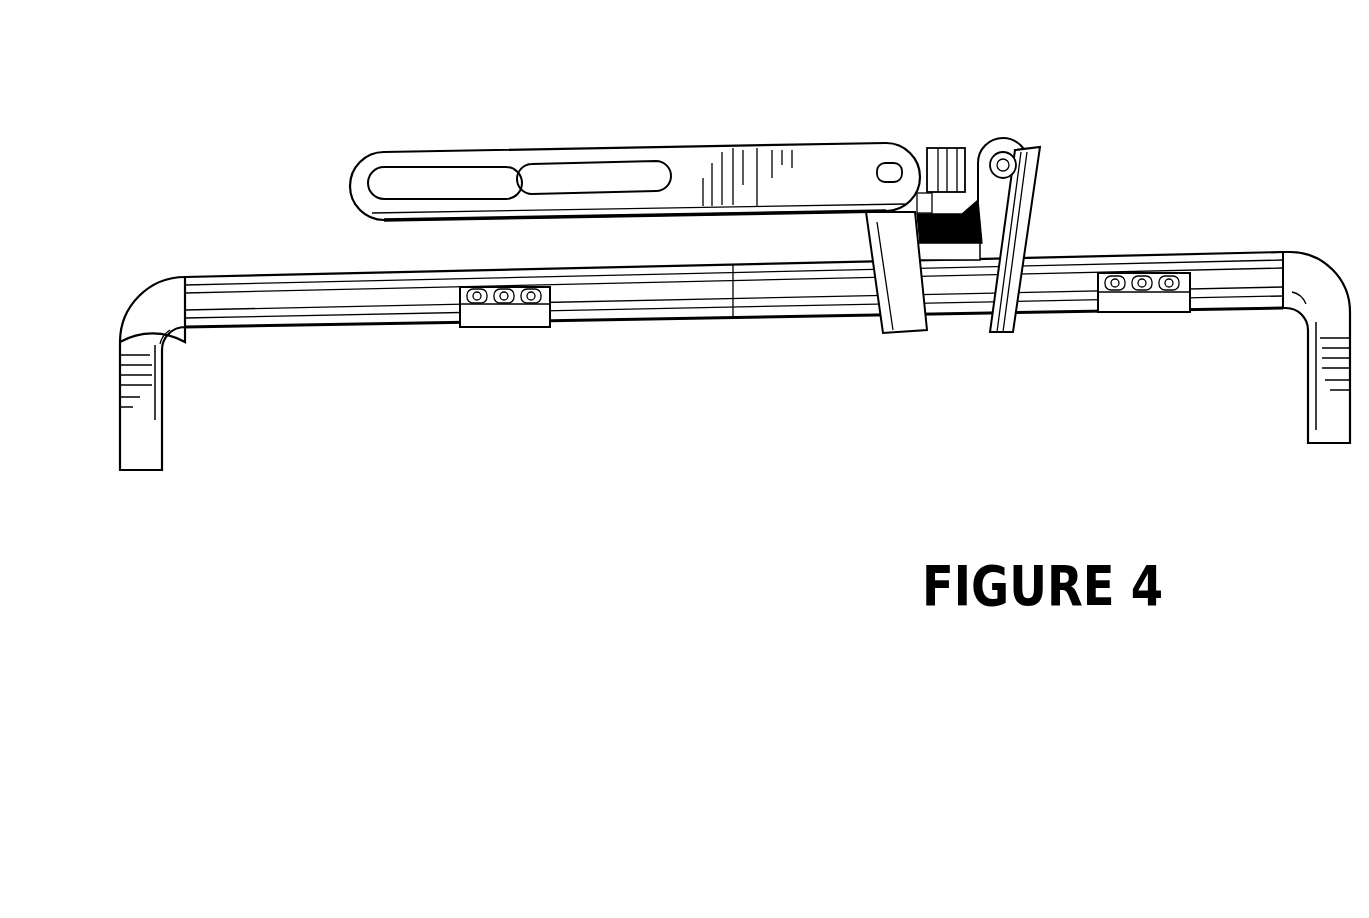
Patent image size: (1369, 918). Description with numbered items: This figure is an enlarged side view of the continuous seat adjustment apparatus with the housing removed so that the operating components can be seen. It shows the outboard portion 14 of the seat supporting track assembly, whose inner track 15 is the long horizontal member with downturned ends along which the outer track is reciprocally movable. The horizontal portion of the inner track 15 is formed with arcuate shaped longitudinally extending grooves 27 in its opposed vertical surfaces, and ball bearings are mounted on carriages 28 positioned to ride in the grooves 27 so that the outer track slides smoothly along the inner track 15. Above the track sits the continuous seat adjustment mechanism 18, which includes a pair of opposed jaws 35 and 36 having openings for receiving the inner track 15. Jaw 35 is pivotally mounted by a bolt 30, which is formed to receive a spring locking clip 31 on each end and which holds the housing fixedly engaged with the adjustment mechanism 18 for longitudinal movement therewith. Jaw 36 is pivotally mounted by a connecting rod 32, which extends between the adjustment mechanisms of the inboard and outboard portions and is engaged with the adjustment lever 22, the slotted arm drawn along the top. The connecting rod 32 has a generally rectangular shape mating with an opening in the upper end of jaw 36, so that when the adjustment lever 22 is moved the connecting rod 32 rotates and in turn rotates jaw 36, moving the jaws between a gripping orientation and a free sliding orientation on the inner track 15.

The outboard portion 14 is at (180, 250).
The inner track 15 is at (256, 322).
The grooves 27 is at (335, 302).
The carriages 28 is at (511, 316).
The adjustment lever 22 is at (350, 181).
The connecting rod 32 is at (893, 172).
The continuous seat adjustment mechanism 18 is at (1118, 125).
The bolt 30 is at (1010, 167).
The spring locking clip 31 is at (1034, 203).
The jaw 35 is at (990, 318).
The jaw 36 is at (920, 318).